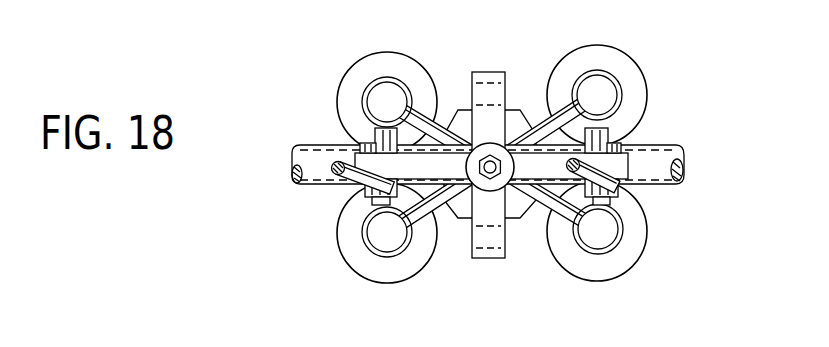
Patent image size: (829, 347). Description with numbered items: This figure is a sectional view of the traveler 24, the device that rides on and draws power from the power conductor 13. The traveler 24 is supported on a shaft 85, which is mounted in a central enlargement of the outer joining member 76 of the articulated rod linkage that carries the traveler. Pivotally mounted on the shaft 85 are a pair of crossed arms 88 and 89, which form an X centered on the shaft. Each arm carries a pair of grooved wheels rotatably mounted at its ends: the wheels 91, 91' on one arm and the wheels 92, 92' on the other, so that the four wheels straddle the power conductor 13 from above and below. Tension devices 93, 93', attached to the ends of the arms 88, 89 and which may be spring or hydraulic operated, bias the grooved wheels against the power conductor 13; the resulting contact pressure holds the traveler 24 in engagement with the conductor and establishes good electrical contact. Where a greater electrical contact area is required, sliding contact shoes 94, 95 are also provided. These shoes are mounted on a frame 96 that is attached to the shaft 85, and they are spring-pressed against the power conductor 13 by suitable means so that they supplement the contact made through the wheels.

The power conductor 13 is at (288, 192).
The traveler 24 is at (355, 185).
The outer joining member 76 is at (362, 190).
The shaft 85 is at (490, 173).
The crossed arm 88 is at (440, 222).
The crossed arm 89 is at (435, 108).
The grooved wheel 91 is at (611, 89).
The grooved wheel 91' is at (370, 238).
The grooved wheel 92 is at (617, 231).
The grooved wheel 92' is at (360, 101).
The tension device 93 is at (630, 123).
The tension device 93' is at (343, 131).
The sliding contact shoe 94 is at (515, 110).
The sliding contact shoe 95 is at (518, 210).
The frame 96 is at (490, 72).